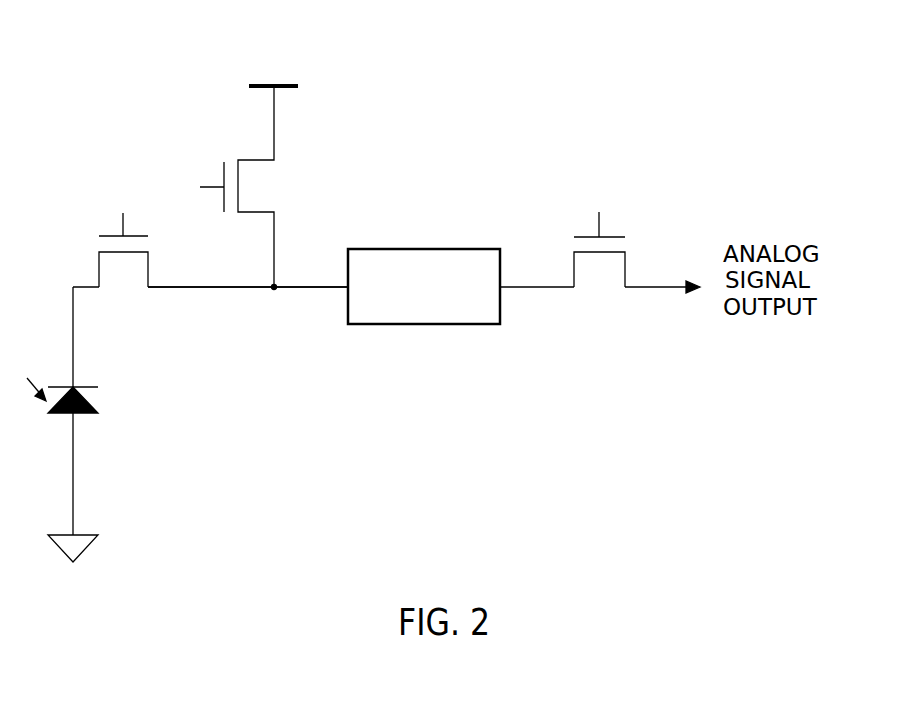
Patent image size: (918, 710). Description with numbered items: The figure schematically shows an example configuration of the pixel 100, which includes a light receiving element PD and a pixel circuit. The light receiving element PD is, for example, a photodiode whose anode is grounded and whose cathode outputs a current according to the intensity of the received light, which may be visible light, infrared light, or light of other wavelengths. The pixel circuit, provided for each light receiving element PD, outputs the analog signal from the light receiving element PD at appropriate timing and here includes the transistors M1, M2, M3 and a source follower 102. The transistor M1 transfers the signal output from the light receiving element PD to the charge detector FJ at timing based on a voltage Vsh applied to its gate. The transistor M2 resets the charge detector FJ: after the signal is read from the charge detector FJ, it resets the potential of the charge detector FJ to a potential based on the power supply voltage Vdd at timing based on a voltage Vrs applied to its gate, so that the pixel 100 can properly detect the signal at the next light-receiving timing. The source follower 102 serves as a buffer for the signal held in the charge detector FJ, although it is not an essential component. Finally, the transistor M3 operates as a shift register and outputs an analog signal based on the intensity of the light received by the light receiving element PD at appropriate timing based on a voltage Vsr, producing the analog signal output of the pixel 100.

The pixel 100 is at (690, 60).
The source follower 102 is at (430, 326).
The transistor M1 is at (128, 281).
The transistor M2 is at (272, 182).
The transistor M3 is at (599, 281).
The light receiving element PD is at (103, 397).
The charge detector FJ is at (300, 290).
The power supply voltage Vdd is at (297, 90).
The voltage Vsh is at (121, 200).
The voltage Vrs is at (178, 188).
The voltage Vsr is at (599, 197).